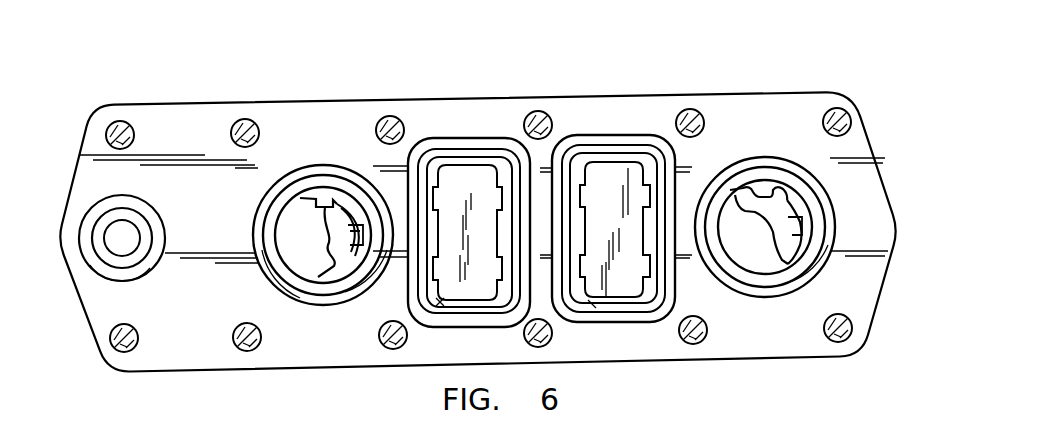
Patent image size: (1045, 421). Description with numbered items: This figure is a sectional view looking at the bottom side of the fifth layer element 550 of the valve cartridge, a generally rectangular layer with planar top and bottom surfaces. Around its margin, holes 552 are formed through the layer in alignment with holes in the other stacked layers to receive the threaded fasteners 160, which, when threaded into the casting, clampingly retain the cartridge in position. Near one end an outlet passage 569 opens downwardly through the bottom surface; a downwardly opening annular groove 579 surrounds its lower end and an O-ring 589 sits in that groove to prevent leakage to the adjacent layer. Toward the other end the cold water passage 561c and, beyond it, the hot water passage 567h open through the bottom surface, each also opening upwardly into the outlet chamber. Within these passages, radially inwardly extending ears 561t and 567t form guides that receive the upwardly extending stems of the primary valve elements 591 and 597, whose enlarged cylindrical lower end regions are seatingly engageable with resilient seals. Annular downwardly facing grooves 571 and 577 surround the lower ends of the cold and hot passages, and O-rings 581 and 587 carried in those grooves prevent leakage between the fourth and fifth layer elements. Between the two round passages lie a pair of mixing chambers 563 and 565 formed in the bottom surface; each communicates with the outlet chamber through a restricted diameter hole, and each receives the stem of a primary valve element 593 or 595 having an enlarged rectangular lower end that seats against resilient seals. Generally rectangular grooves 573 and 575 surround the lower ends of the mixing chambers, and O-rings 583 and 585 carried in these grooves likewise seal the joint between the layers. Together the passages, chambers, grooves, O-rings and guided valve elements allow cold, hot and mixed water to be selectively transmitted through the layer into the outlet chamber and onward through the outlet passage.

The fifth layer element 550 is at (756, 92).
The threaded fasteners 160 is at (110, 126).
The holes 552 is at (120, 121).
The O-ring 589 is at (128, 182).
The annular groove 579 is at (127, 278).
The outlet passage 569 is at (120, 232).
The annular groove 577 is at (255, 225).
The O-ring 587 is at (325, 148).
The O-ring 585 is at (342, 290).
The radially inwardly extending ear 567t is at (330, 200).
The hot water passage 567h is at (305, 283).
The primary valve element 597 is at (300, 282).
The rectangular groove 575 is at (480, 142).
The mixing chamber 565 is at (498, 165).
The primary valve element 595 is at (442, 298).
The rectangular groove 573 is at (635, 138).
The O-ring 583 is at (667, 190).
The mixing chamber 563 is at (643, 297).
The primary valve element 593 is at (590, 298).
The annular groove 571 is at (817, 192).
The O-ring 581 is at (790, 140).
The primary valve element 591 is at (752, 283).
The radially inwardly extending ear 561t is at (745, 190).
The cold water passage 561c is at (848, 152).